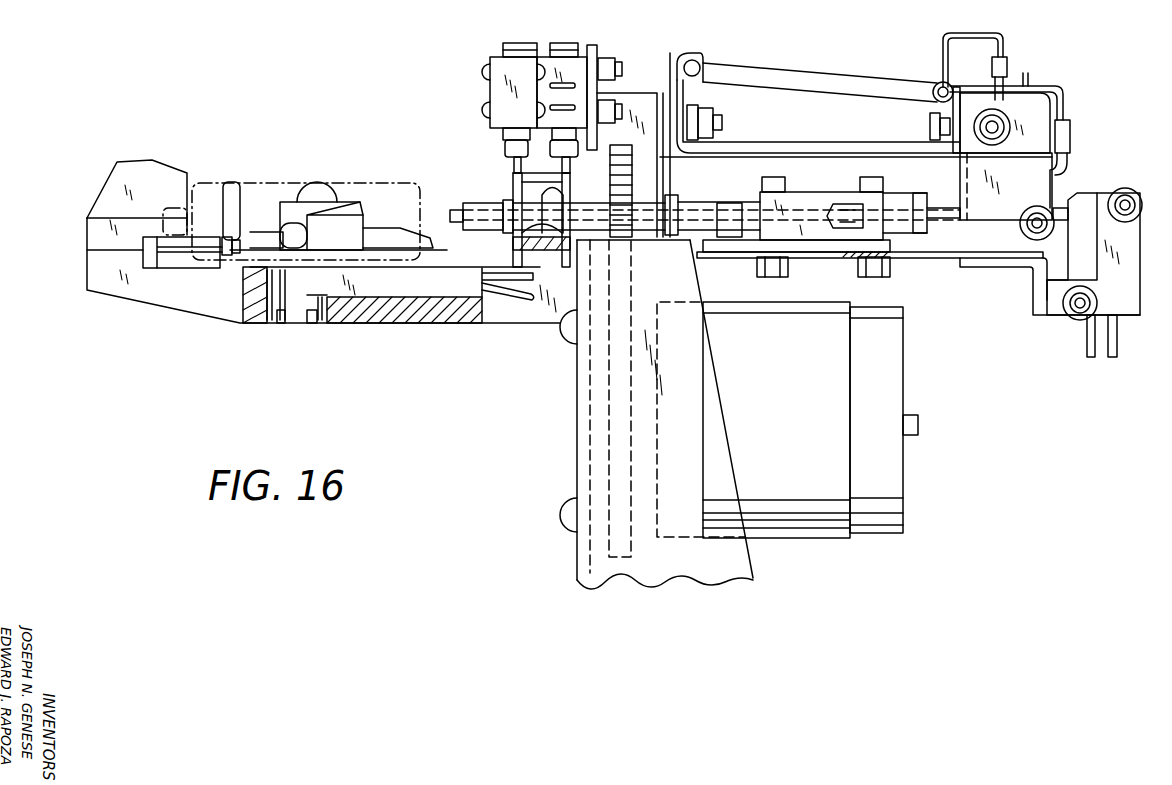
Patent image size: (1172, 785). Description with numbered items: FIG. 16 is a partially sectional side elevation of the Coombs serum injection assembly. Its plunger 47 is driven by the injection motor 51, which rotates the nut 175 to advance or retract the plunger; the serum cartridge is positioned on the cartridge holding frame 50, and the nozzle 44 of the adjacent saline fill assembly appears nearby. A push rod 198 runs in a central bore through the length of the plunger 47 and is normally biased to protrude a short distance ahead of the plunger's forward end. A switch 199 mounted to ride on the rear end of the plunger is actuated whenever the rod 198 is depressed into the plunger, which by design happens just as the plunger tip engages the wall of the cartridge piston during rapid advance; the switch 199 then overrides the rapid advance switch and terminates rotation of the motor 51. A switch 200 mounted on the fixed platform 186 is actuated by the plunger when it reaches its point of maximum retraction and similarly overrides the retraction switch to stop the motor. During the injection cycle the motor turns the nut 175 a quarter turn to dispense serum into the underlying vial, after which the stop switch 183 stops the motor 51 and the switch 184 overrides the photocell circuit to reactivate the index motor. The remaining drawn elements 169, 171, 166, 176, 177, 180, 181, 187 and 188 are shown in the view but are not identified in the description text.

The housing block 169 is at (120, 190).
The nozzle 44 is at (200, 250).
The plunger 47 is at (453, 210).
The push rod 198 is at (470, 207).
The actuating rod 181 is at (517, 170).
The yoke 180 is at (518, 182).
The stop switch 183 is at (507, 75).
The switch 184 is at (578, 62).
The nut 175 is at (593, 210).
The support plate 176 is at (623, 271).
The mounting plate 166 is at (600, 410).
The gear housing 177 is at (623, 562).
The slide 171 is at (373, 292).
The cartridge holding frame 50 is at (423, 312).
The injection motor 51 is at (810, 510).
The fixed platform 186 is at (817, 255).
The plate 187 is at (903, 257).
The bracket 188 is at (950, 267).
The switch 199 is at (1037, 177).
The switch 200 is at (1127, 307).